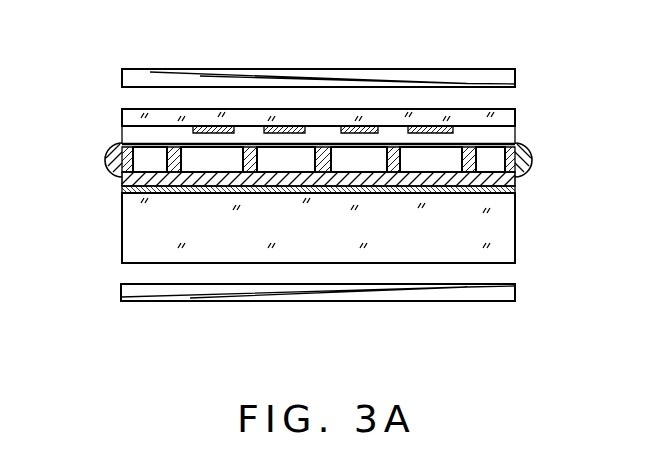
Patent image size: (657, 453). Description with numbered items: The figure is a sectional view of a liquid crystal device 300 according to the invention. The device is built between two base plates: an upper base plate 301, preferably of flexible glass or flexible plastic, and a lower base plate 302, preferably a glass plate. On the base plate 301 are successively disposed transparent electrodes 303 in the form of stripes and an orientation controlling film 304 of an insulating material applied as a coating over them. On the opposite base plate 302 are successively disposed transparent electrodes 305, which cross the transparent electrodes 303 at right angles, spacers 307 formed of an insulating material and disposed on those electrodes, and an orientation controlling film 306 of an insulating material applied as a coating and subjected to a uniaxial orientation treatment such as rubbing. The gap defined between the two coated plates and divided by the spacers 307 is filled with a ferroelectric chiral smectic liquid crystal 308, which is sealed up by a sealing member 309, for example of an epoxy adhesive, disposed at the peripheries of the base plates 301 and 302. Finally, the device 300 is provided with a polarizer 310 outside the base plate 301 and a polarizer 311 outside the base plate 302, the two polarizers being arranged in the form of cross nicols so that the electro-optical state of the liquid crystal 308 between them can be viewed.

The liquid crystal device 300 is at (532, 88).
The base plate 301 is at (517, 112).
The base plate 302 is at (510, 229).
The transparent electrodes 303 is at (371, 128).
The orientation controlling film 304 is at (517, 137).
The transparent electrodes 305 is at (505, 185).
The orientation controlling film 306 is at (186, 186).
The spacers 307 is at (112, 165).
The ferroelectric chiral smectic liquid crystal 308 is at (213, 160).
The sealing member 309 is at (120, 153).
The polarizer 310 is at (480, 70).
The polarizer 311 is at (515, 289).